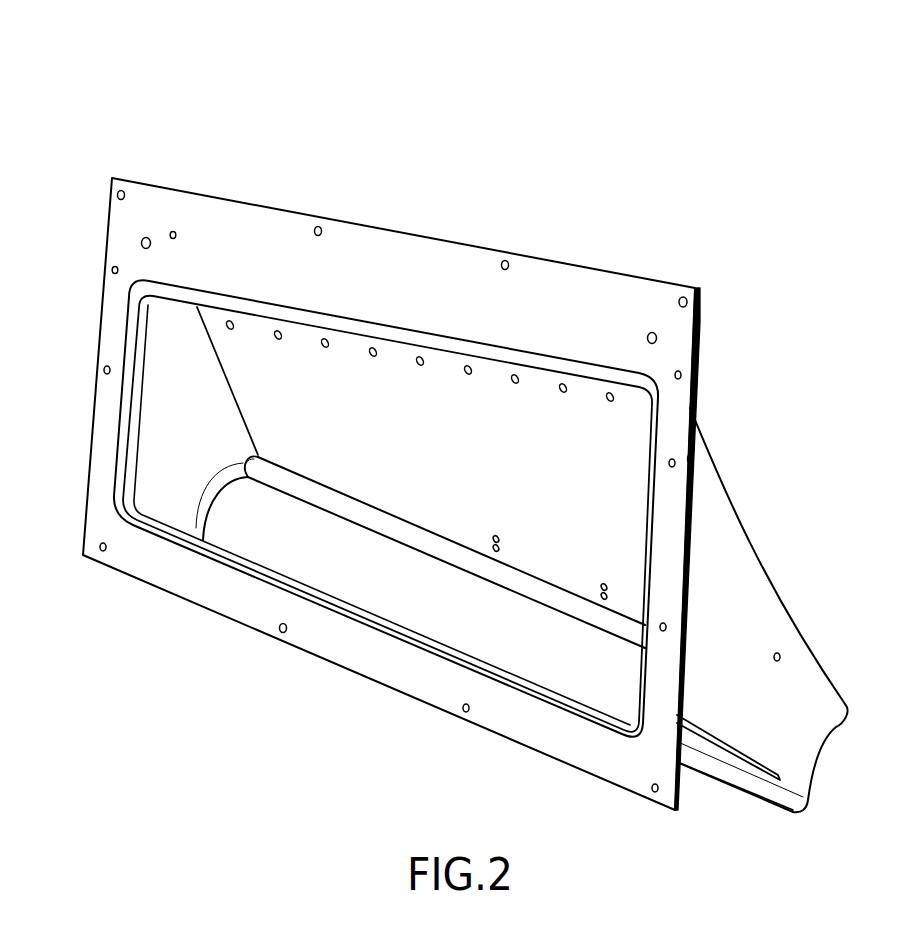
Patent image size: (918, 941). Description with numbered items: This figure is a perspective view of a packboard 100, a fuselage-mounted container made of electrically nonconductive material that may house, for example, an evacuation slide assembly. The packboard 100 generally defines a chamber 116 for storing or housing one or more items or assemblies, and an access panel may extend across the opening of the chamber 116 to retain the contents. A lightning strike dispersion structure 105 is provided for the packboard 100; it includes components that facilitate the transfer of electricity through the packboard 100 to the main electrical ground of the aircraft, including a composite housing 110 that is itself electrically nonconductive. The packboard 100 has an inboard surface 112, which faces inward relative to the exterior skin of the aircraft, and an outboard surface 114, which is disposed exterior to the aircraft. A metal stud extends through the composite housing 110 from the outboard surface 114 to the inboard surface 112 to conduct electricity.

The packboard 100 is at (435, 449).
The lightning strike dispersion structure 105 is at (190, 228).
The composite housing 110 is at (728, 560).
The inboard surface 112 is at (677, 785).
The outboard surface 114 is at (517, 727).
The chamber 116 is at (152, 457).